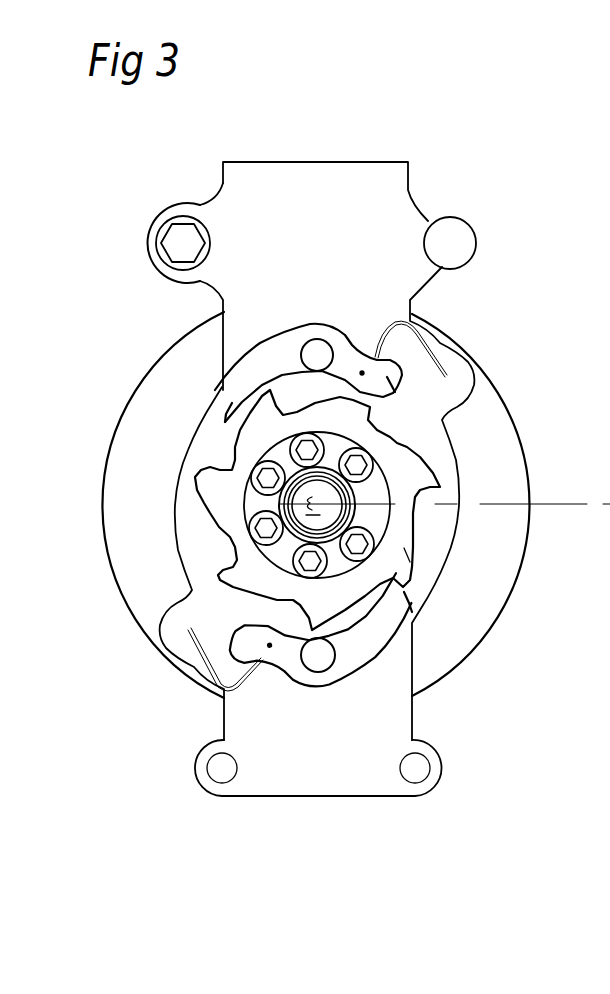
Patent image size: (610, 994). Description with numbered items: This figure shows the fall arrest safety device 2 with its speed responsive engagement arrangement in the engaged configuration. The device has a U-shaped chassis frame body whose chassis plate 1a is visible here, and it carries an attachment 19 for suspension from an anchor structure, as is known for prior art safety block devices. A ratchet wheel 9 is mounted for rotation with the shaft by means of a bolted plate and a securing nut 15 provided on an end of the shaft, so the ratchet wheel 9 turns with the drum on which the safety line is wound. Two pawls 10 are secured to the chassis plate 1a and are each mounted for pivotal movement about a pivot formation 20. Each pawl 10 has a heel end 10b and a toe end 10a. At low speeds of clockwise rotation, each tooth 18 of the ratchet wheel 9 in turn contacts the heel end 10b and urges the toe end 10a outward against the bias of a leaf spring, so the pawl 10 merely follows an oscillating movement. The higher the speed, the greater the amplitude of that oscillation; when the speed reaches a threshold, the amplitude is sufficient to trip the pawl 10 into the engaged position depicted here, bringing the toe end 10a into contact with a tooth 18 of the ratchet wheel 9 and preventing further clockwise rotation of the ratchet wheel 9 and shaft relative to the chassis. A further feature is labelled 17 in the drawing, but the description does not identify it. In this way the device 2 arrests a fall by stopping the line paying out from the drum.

The fall arrest safety device 2 is at (366, 106).
The chassis plate 1a is at (390, 215).
The attachment 19 is at (192, 197).
The ratchet wheel 9 is at (217, 507).
The pawl 10 is at (275, 352).
The toe end 10a is at (232, 403).
The heel end 10b is at (393, 387).
The securing nut 15 is at (280, 507).
The stop surface 17 is at (375, 517).
The tooth 18 is at (400, 553).
The pivot formation 20 is at (318, 352).